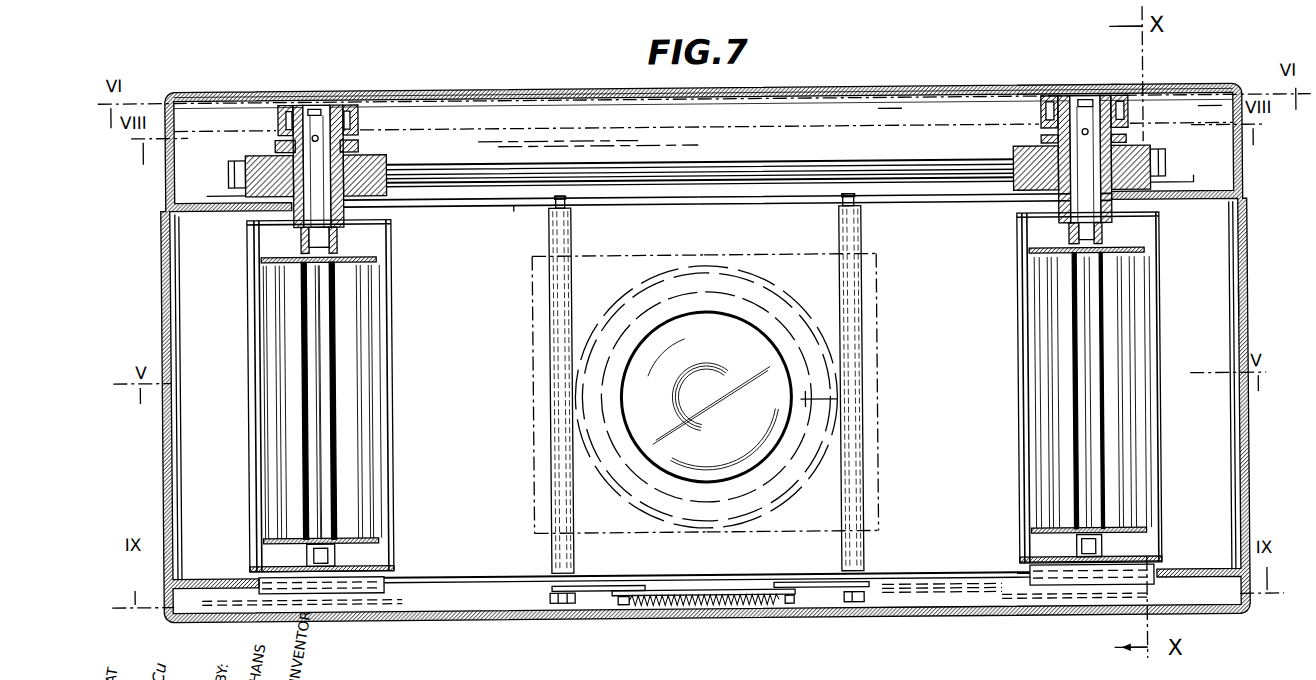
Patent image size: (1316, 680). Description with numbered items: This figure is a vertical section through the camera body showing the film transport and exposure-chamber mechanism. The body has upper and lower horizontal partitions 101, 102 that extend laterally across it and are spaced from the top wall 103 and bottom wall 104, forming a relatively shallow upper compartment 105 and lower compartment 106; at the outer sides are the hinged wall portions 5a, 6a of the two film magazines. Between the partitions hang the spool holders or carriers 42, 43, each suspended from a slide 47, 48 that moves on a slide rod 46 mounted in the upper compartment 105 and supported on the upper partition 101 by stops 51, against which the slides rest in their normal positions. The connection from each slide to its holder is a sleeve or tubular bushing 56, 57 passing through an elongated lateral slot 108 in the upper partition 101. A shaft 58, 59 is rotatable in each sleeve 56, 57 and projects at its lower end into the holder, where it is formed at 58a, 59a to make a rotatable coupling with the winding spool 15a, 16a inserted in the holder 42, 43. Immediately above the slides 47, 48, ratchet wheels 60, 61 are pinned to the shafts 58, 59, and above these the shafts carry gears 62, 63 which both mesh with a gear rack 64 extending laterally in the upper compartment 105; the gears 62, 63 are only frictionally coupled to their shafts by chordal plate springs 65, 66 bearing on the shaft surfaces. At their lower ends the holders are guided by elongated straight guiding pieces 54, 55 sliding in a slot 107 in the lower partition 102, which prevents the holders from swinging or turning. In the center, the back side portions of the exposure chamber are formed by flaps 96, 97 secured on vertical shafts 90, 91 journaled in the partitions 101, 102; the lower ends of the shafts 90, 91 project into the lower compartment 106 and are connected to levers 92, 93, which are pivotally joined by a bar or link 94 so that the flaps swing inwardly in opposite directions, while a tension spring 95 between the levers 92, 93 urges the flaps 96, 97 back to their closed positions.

The hinged wall portion 5a is at (163, 318).
The hinged wall portion 6a is at (1246, 284).
The winding spool 15a is at (334, 416).
The winding spool 16a is at (1096, 397).
The spool holder 42 is at (389, 359).
The spool holder 43 is at (1018, 375).
The slide rod 46 is at (690, 162).
The slide 47 is at (388, 192).
The slide 48 is at (1024, 186).
The stop 51 is at (222, 176).
The guiding piece 54 is at (371, 590).
The guiding piece 55 is at (1040, 590).
The sleeve 56 is at (368, 164).
The sleeve 57 is at (1040, 150).
The shaft 58 is at (331, 101).
The formed lower end of shaft 58a is at (336, 240).
The shaft 59 is at (1081, 108).
The formed lower end of shaft 59a is at (1090, 236).
The ratchet wheel 60 is at (284, 143).
The ratchet wheel 61 is at (1147, 132).
The gear 62 is at (353, 113).
The gear 63 is at (1047, 107).
The gear rack 64 is at (874, 123).
The plate spring 65 is at (292, 100).
The plate spring 66 is at (1116, 85).
The vertical shaft 90 is at (550, 285).
The vertical shaft 91 is at (863, 270).
The lever 92 is at (590, 602).
The lever 93 is at (830, 604).
The link 94 is at (706, 590).
The tension spring 95 is at (702, 605).
The flap 96 is at (548, 365).
The flap 97 is at (865, 360).
The upper partition 101 is at (893, 186).
The lower partition 102 is at (912, 575).
The top wall 103 is at (930, 86).
The bottom wall 104 is at (985, 614).
The upper compartment 105 is at (830, 135).
The lower compartment 106 is at (940, 605).
The slot 107 is at (881, 592).
The slot 108 is at (526, 206).